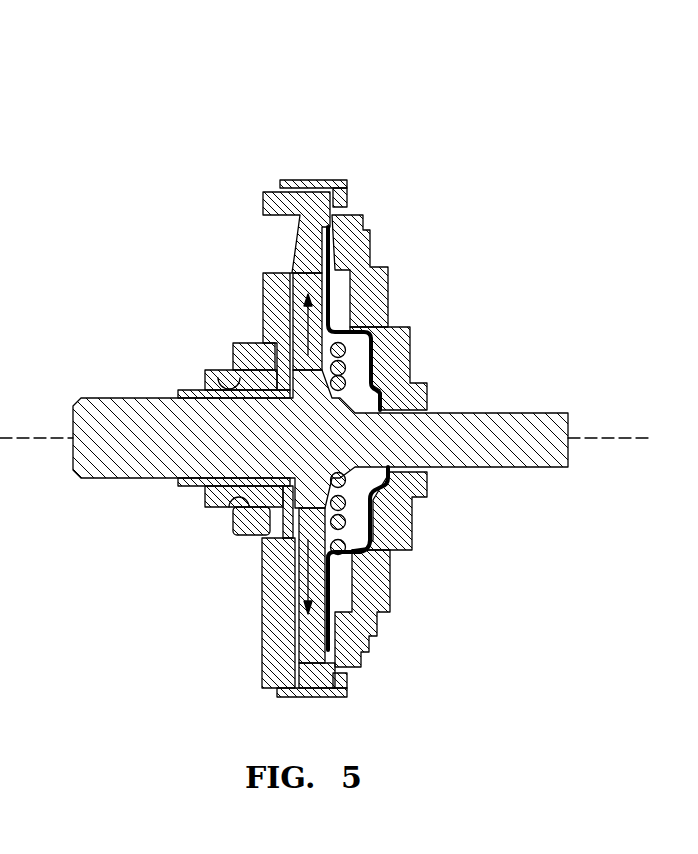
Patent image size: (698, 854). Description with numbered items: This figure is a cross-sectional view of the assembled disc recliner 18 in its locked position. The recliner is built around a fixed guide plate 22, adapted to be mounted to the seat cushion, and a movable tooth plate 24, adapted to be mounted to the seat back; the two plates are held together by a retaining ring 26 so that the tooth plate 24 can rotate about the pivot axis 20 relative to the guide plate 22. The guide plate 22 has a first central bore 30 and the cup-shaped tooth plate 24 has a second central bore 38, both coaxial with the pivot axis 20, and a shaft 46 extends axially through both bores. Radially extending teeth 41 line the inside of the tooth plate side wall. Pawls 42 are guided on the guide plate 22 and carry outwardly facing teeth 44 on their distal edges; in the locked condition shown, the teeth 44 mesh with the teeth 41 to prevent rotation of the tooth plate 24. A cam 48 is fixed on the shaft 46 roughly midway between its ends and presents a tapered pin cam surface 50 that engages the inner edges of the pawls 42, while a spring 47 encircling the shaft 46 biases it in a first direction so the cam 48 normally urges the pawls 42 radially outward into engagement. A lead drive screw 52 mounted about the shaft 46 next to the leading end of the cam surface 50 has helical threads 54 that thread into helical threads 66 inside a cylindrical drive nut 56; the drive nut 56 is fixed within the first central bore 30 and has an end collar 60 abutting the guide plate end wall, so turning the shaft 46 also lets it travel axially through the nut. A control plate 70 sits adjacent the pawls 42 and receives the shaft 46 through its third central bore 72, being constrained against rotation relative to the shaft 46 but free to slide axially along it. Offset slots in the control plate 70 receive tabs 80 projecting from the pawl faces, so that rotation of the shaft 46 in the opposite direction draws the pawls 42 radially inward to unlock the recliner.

The disc recliner 18 is at (521, 95).
The pivot axis 20 is at (648, 438).
The guide plate 22 is at (262, 647).
The tooth plate 24 is at (375, 628).
The retaining ring 26 is at (350, 692).
The first central bore 30 is at (247, 503).
The second central bore 38 is at (427, 408).
The teeth 41 is at (298, 693).
The pawls 42 is at (305, 288).
The teeth 44 is at (263, 690).
The shaft 46 is at (513, 415).
The spring 47 is at (412, 540).
The cam 48 is at (317, 392).
The tapered pin cam surface 50 is at (300, 375).
The lead drive screw 52 is at (180, 487).
The helical threads 54 is at (203, 373).
The cylindrical drive nut 56 is at (203, 507).
The end collar 60 is at (262, 540).
The helical threads 66 is at (240, 383).
The control plate 70 is at (345, 252).
The third central bore 72 is at (397, 472).
The tabs 80 is at (338, 615).